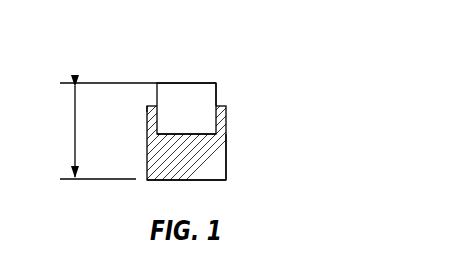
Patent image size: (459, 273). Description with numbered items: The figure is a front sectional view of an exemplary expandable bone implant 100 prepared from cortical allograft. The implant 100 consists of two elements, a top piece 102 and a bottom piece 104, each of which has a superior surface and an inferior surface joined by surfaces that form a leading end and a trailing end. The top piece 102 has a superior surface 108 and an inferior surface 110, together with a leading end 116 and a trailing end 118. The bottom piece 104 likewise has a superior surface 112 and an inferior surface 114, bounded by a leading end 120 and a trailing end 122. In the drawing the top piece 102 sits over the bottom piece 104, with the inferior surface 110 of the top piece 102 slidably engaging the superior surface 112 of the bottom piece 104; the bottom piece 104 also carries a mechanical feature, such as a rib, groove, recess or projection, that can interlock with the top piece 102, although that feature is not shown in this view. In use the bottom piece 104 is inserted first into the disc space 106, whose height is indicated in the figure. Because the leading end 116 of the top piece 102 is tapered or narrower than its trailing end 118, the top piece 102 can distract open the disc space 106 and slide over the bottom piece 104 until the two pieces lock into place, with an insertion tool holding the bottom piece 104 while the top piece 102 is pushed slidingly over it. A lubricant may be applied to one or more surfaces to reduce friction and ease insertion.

The expandable bone implant 100 is at (316, 86).
The top piece 102 is at (232, 92).
The bottom piece 104 is at (240, 134).
The disc space 106 is at (74, 141).
The superior surface 108 is at (185, 83).
The inferior surface 110 is at (193, 136).
The superior surface 112 is at (155, 105).
The inferior surface 114 is at (202, 181).
The leading end 116 is at (149, 104).
The trailing end 118 is at (220, 92).
The leading end 120 is at (147, 163).
The trailing end 122 is at (226, 170).